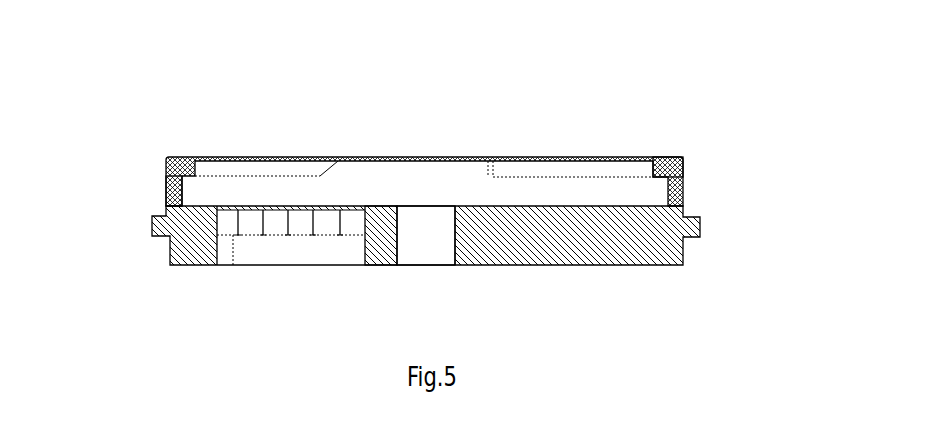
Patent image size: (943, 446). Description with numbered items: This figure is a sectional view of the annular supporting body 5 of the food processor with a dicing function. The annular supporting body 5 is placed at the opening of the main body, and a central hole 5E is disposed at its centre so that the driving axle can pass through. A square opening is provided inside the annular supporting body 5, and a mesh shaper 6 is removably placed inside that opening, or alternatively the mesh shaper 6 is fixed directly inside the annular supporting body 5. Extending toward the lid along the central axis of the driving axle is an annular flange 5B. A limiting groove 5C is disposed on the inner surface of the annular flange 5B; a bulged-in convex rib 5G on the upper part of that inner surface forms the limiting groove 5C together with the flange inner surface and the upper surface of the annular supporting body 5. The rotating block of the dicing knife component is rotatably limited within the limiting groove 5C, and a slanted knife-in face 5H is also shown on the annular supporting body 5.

The annular supporting body 5 is at (707, 272).
The annular flange 5B is at (165, 202).
The limiting groove 5C is at (165, 174).
The central hole 5E is at (430, 248).
The convex rib 5G is at (682, 158).
The slanted knife-in face 5H is at (328, 170).
The mesh shaper 6 is at (283, 222).